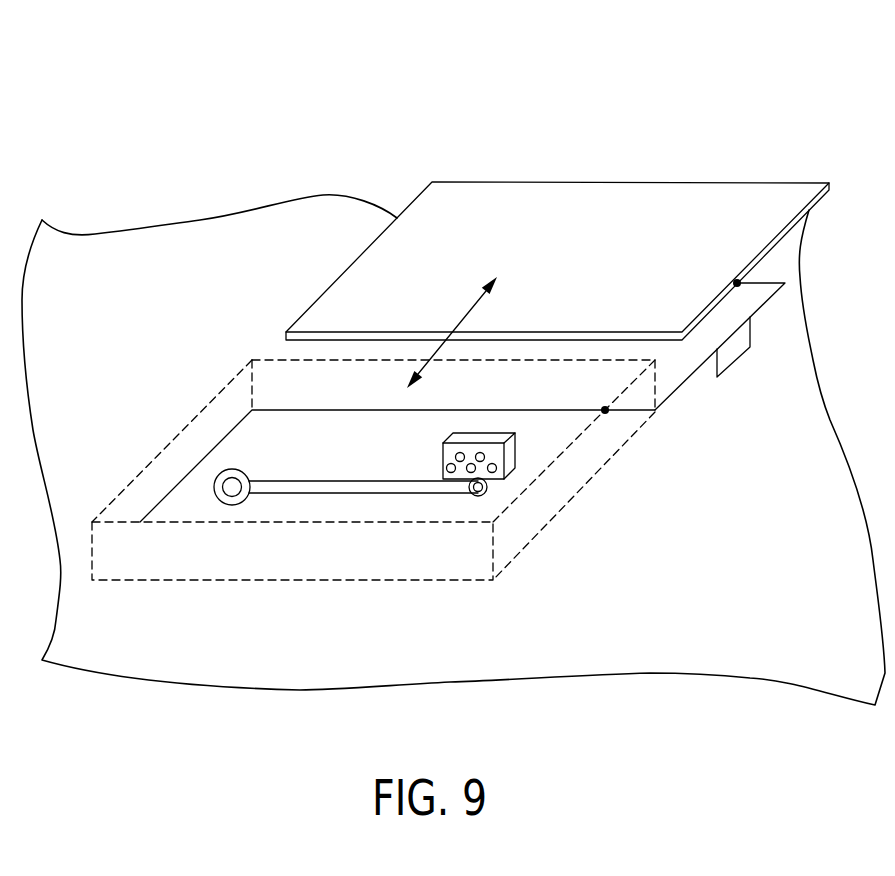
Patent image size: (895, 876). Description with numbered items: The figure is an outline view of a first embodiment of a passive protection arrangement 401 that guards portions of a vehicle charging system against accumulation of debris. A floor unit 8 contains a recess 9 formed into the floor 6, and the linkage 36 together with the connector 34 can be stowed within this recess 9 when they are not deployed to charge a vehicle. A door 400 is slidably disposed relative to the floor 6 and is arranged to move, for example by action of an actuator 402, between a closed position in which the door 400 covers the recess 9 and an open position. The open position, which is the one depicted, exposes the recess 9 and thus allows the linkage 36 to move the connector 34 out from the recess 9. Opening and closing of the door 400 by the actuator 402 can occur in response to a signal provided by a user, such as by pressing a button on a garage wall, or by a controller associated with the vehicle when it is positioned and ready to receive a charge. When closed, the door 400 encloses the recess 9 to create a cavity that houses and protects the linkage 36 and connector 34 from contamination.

The floor 6 is at (812, 397).
The floor unit 8 is at (142, 490).
The recess 9 is at (276, 372).
The connector 34 is at (508, 455).
The linkage 36 is at (303, 497).
The door 400 is at (738, 198).
The passive protection arrangement 401 is at (460, 84).
The actuator 402 is at (738, 340).